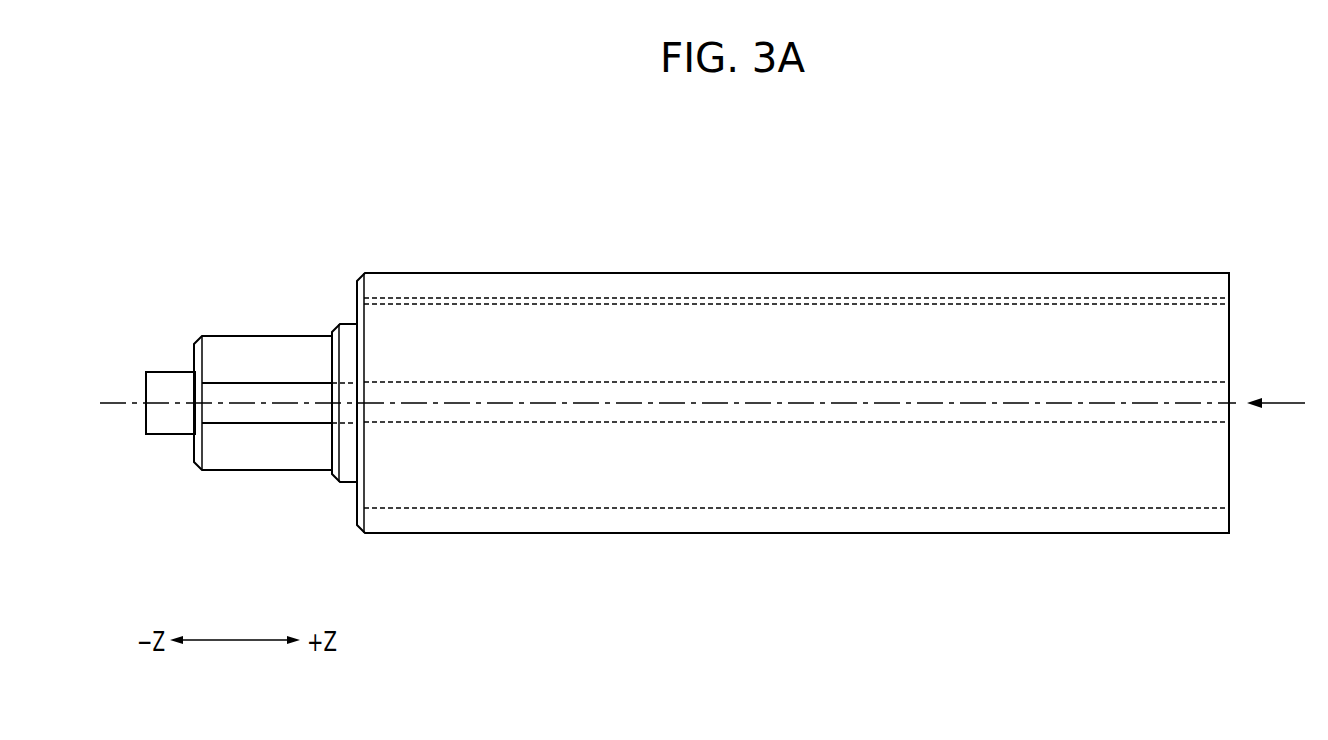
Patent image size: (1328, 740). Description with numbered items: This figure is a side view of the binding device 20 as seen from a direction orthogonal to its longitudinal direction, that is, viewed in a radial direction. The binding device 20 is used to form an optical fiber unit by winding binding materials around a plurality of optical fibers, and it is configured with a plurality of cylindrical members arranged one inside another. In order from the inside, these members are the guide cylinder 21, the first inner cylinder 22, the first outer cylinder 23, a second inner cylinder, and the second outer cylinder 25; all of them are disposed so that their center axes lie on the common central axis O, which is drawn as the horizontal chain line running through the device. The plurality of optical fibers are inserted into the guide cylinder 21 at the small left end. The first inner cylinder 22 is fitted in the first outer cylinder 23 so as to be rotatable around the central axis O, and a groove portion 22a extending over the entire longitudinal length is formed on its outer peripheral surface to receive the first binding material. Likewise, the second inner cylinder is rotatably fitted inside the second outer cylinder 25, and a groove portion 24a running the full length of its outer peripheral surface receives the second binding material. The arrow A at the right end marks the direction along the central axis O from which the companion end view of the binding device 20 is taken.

The binding device 20 is at (433, 253).
The guide cylinder 21 is at (167, 371).
The first inner cylinder 22 is at (230, 341).
The groove portion 22a is at (661, 388).
The first outer cylinder 23 is at (347, 323).
The groove portion 24a is at (528, 306).
The second outer cylinder 25 is at (820, 271).
The central axis O is at (113, 400).
The arrow A is at (1286, 405).